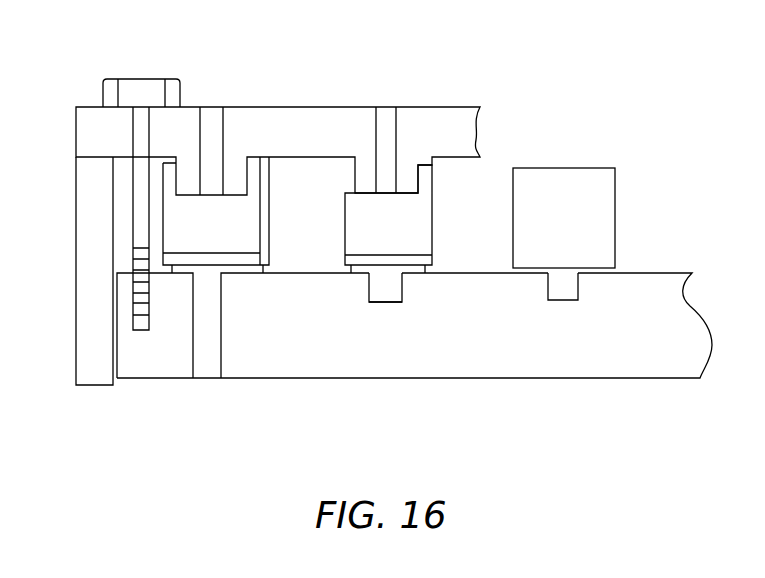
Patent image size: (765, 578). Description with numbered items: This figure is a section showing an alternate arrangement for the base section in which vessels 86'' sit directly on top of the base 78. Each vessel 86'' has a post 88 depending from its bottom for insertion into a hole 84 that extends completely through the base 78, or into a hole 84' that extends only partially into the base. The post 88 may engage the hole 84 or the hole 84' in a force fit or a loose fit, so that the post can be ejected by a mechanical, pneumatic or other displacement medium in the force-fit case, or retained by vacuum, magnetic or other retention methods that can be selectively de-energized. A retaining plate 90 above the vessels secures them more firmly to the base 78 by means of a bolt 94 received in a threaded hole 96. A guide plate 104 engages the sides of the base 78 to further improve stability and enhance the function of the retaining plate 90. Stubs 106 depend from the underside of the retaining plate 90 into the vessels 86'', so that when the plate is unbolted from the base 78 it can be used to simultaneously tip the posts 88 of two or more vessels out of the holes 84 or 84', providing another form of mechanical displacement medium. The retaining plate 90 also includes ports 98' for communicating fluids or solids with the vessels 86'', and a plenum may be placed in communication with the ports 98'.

The base 78 is at (292, 370).
The hole 84 is at (155, 325).
The hole 84' is at (492, 302).
The vessel 86'' is at (502, 219).
The post 88 is at (370, 293).
The retaining plate 90 is at (84, 115).
The bolt 94 is at (139, 88).
The threaded hole 96 is at (150, 292).
The port 98' is at (232, 133).
The guide plate 104 is at (75, 231).
The stub 106 is at (355, 157).